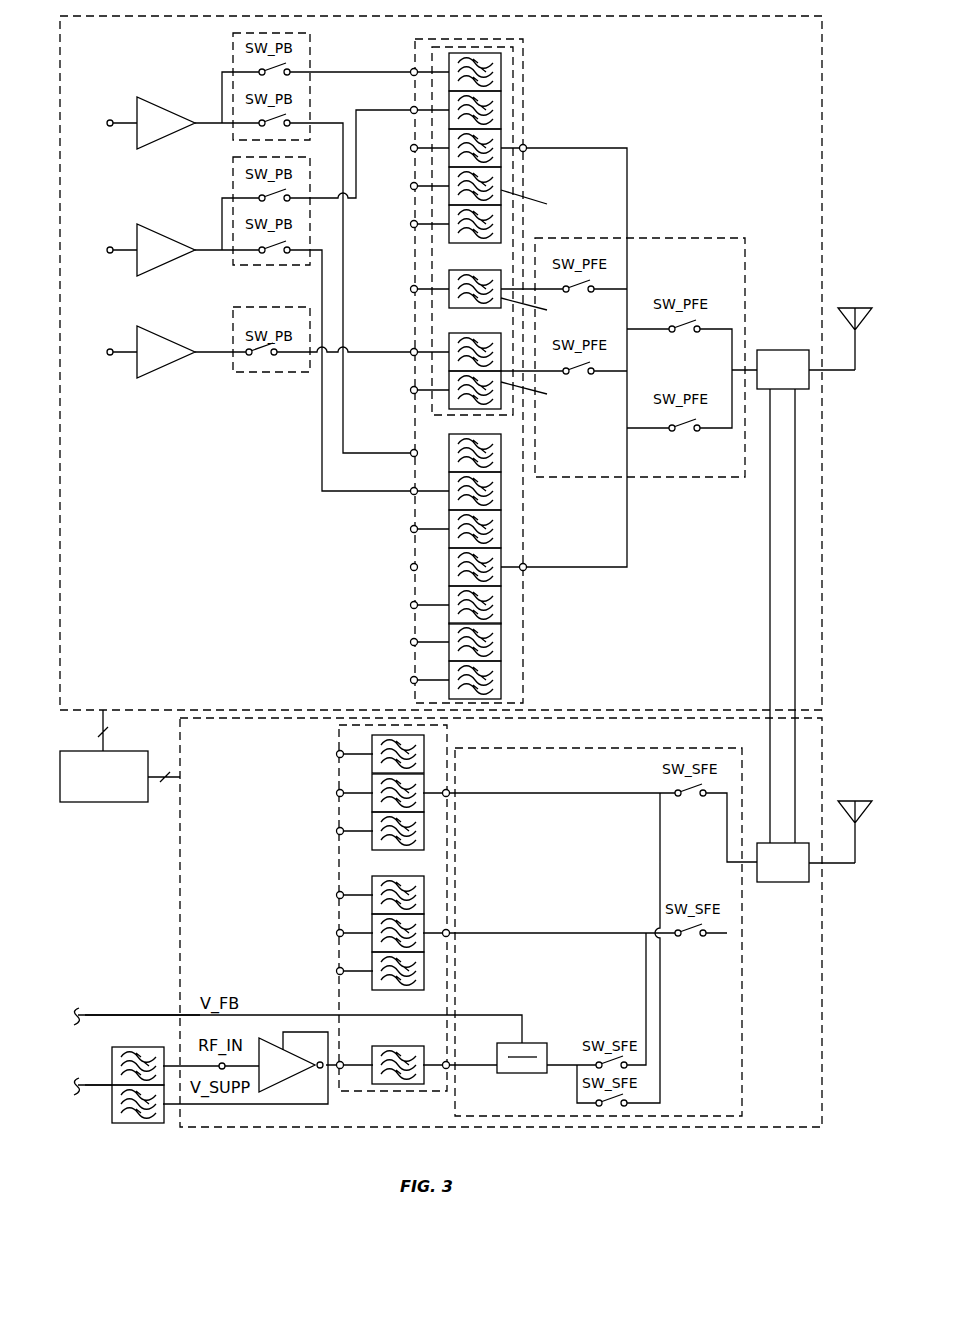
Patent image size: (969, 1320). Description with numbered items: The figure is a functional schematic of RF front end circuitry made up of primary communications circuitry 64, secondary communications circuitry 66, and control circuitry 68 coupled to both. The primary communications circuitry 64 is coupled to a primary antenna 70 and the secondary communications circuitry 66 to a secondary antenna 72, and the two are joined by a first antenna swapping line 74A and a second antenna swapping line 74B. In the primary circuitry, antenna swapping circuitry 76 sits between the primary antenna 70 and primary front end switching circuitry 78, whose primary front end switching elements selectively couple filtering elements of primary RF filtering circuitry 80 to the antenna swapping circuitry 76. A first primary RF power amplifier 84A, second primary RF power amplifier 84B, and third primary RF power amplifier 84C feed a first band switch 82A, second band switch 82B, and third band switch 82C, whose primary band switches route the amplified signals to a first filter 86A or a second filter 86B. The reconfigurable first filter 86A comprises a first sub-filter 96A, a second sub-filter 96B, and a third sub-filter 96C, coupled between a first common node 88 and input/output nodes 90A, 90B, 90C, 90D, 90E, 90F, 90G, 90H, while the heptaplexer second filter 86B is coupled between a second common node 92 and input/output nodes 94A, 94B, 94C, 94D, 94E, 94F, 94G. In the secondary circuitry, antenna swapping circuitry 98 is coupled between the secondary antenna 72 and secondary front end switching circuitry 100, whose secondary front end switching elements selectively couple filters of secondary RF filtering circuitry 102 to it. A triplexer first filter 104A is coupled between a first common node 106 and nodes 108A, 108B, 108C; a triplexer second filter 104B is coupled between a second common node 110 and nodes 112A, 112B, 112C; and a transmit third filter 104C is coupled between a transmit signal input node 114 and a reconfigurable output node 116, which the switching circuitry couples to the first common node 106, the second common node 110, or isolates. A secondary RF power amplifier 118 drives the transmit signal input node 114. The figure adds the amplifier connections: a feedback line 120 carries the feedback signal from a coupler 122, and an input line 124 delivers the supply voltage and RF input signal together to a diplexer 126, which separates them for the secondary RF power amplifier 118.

The primary communications circuitry 64 is at (95, 699).
The secondary communications circuitry 66 is at (810, 1114).
The control circuitry 68 is at (114, 799).
The primary antenna 70 is at (850, 306).
The secondary antenna 72 is at (850, 800).
The first antenna swapping line 74A is at (768, 613).
The second antenna swapping line 74B is at (797, 613).
The antenna swapping circuitry 76 is at (793, 379).
The primary front end switching circuitry 78 is at (736, 467).
The primary RF filtering circuitry 80 is at (523, 678).
The first band switch 82A is at (233, 48).
The second band switch 82B is at (233, 177).
The third band switch 82C is at (233, 325).
The first primary RF power amplifier 84A is at (172, 132).
The second primary RF power amplifier 84B is at (172, 259).
The third primary RF power amplifier 84C is at (172, 361).
The first filter 86A is at (513, 78).
The second filter 86B is at (501, 645).
The first common node 88 is at (525, 145).
The first one of the first set of input/output nodes 90A is at (411, 70).
The second one of the first set of input/output nodes 90B is at (411, 108).
The third one of the first set of input/output nodes 90C is at (411, 146).
The fourth one of the first set of input/output nodes 90D is at (411, 184).
The fifth one of the first set of input/output nodes 90E is at (411, 222).
The sixth one of the first set of input/output nodes 90F is at (411, 287).
The seventh one of the first set of input/output nodes 90G is at (411, 349).
The eighth one of the first set of input/output nodes 90H is at (411, 388).
The second common node 92 is at (525, 564).
The first one of the second set of input/output nodes 94A is at (411, 450).
The second one of the second set of input/output nodes 94B is at (411, 488).
The third one of the second set of input/output nodes 94C is at (411, 527).
The fourth one of the second set of input/output nodes 94D is at (411, 565).
The fifth one of the second set of input/output nodes 94E is at (411, 603).
The sixth one of the second set of input/output nodes 94F is at (411, 640).
The seventh one of the second set of input/output nodes 94G is at (411, 678).
The first sub-filter 96A is at (541, 201).
The second sub-filter 96B is at (541, 308).
The third sub-filter 96C is at (541, 392).
The antenna swapping circuitry 98 is at (793, 872).
The secondary front end switching circuitry 100 is at (735, 1107).
The secondary RF filtering circuitry 102 is at (447, 745).
The first filter 104A is at (398, 850).
The second filter 104B is at (398, 876).
The third filter 104C is at (390, 1046).
The first common node 106 is at (448, 790).
The first one of the first set of input/output nodes 108A is at (337, 751).
The second one of the first set of input/output nodes 108B is at (337, 790).
The third one of the first set of input/output nodes 108C is at (337, 828).
The second common node 110 is at (448, 930).
The first one of the second set of input/output nodes 112A is at (337, 892).
The second one of the second set of input/output nodes 112B is at (337, 930).
The third one of the second set of input/output nodes 112C is at (337, 968).
The transmit signal input node 114 is at (341, 1061).
The reconfigurable output node 116 is at (448, 1061).
The secondary RF power amplifier 118 is at (296, 1074).
The feedback line 120 is at (104, 1012).
The coupler 122 is at (534, 1041).
The input line 124 is at (96, 1083).
The diplexer 126 is at (122, 1047).